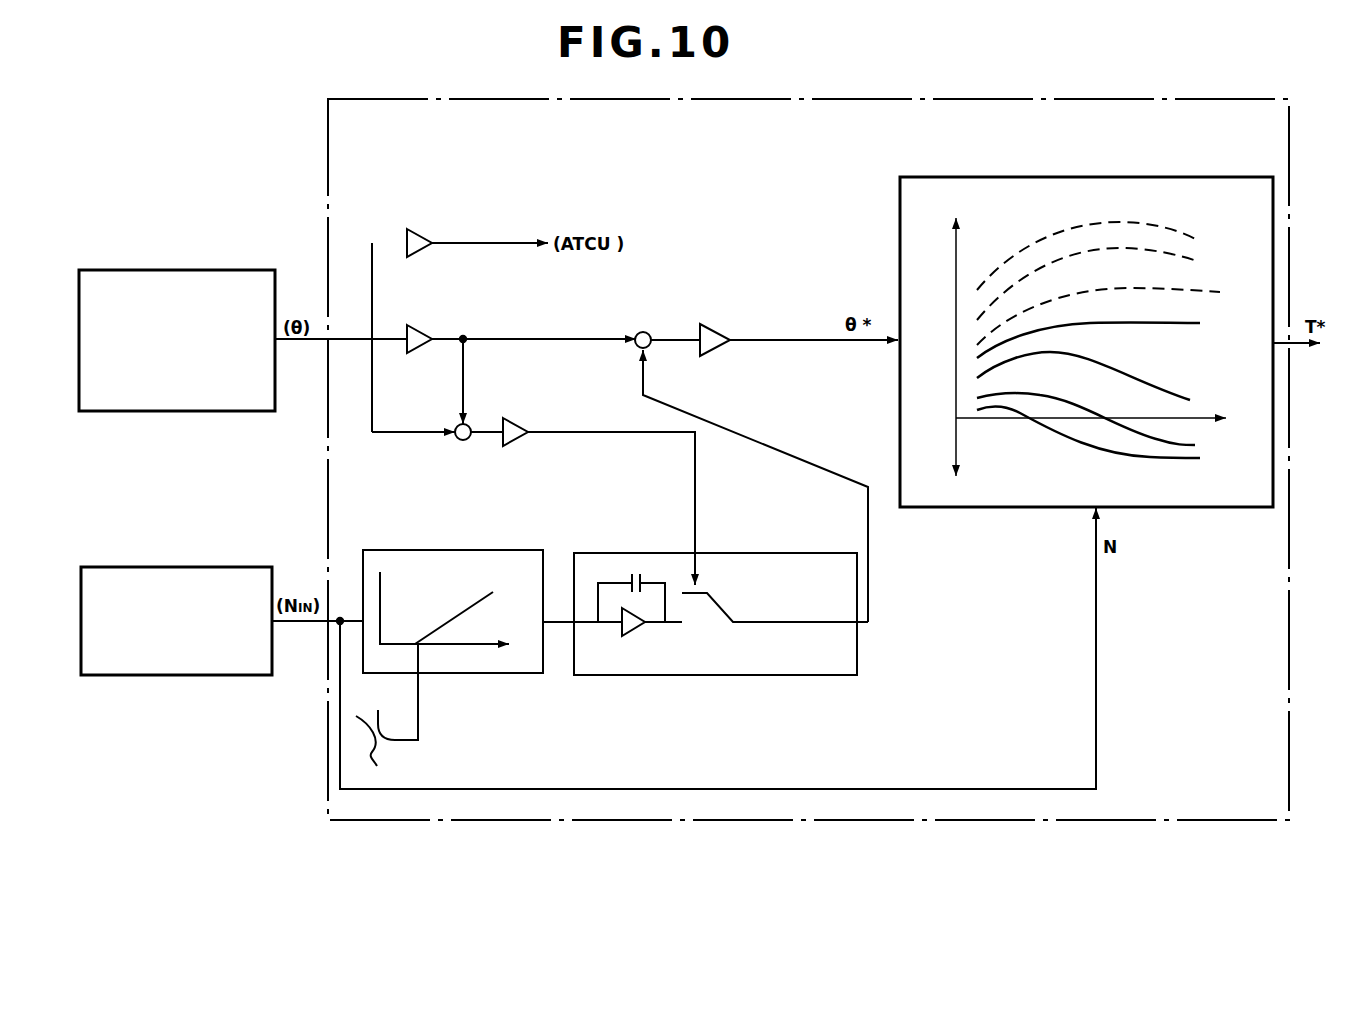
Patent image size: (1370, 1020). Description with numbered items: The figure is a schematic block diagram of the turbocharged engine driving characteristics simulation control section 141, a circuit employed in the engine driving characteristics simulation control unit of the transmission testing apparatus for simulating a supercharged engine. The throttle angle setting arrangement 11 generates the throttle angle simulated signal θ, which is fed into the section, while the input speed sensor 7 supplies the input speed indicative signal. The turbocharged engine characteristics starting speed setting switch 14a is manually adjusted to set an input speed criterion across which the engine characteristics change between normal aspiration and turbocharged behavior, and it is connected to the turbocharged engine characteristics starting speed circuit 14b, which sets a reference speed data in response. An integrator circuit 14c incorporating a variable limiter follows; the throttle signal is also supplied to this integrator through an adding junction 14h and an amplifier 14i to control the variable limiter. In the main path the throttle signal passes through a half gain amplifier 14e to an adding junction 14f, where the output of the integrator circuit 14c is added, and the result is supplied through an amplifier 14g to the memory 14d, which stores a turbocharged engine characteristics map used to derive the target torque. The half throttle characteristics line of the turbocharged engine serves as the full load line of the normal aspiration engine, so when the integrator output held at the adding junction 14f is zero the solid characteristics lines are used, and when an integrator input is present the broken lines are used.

The turbocharged engine driving characteristics simulation control section 141 is at (873, 98).
The throttle angle setting arrangement 11 is at (198, 269).
The input speed sensor 7 is at (196, 566).
The turbocharged engine characteristics starting speed setting switch 14a is at (385, 757).
The turbocharged engine characteristics starting speed circuit 14b is at (494, 550).
The integrator circuit 14c is at (776, 552).
The memory 14d is at (1033, 176).
The ½ gain amplifier 14e is at (420, 352).
The adding junction 14f is at (643, 330).
The amplifier 14g is at (726, 322).
The adding junction 14h is at (460, 443).
The amplifier 14i is at (521, 448).